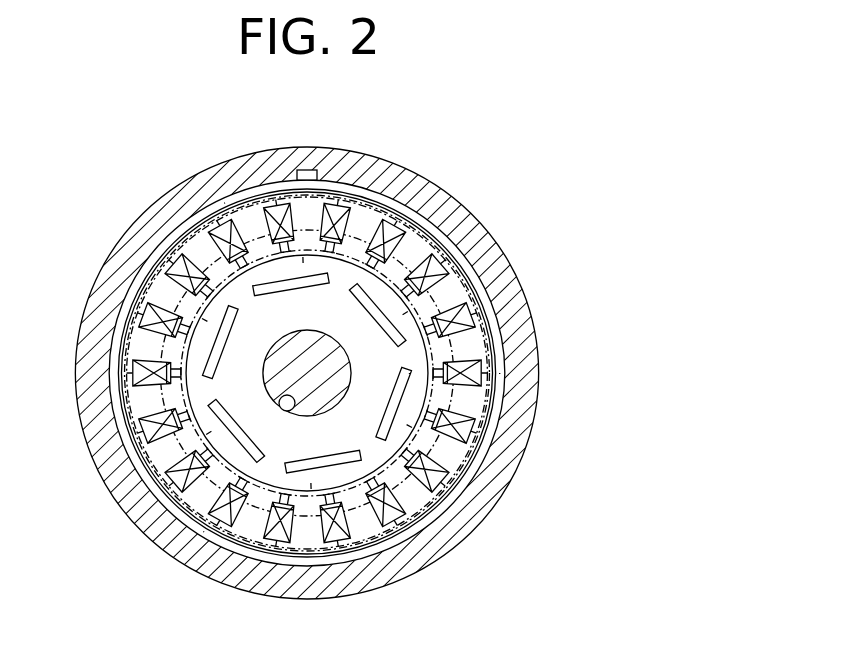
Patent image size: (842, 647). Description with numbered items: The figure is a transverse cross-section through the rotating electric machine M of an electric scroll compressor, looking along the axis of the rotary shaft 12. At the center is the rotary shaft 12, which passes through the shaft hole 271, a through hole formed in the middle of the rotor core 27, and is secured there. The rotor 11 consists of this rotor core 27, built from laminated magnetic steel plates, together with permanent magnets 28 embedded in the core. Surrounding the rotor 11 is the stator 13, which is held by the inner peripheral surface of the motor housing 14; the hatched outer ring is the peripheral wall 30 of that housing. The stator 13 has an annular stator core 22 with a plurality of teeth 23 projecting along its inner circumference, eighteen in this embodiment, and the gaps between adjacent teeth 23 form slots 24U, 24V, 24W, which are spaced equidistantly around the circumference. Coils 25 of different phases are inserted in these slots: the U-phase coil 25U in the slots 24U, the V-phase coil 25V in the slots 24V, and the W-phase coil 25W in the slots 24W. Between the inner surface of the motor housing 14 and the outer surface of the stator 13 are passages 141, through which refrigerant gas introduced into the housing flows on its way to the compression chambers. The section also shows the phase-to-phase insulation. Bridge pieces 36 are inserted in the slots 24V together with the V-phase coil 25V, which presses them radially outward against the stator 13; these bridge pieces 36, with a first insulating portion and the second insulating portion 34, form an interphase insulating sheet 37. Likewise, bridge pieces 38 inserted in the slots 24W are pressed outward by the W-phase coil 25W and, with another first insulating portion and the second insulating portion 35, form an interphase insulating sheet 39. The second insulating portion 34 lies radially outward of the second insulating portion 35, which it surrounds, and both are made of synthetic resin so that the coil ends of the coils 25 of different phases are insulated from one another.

The rotating electric machine M is at (462, 130).
The rotor 11 is at (393, 373).
The rotary shaft 12 is at (331, 351).
The stator 13 is at (316, 376).
The motor housing 14 is at (332, 323).
The stator core 22 is at (504, 282).
The teeth 23 is at (313, 262).
The slots 24U is at (263, 188).
The slots 24V is at (393, 192).
The slots 24W is at (130, 445).
The coils 25 is at (506, 266).
The U-phase coil 25U is at (470, 252).
The V-phase coil 25V is at (440, 216).
The W-phase coil 25W is at (362, 182).
The rotor core 27 is at (496, 405).
The permanent magnets 28 is at (470, 436).
The peripheral wall 30 is at (527, 338).
The second insulating portion 34 is at (269, 373).
The second insulating portion 35 is at (307, 373).
The bridge pieces 36 is at (426, 192).
The interphase insulating sheet 37 is at (128, 332).
The bridge pieces 38 is at (346, 168).
The interphase insulating sheet 39 is at (236, 300).
The passages 141 is at (286, 203).
The shaft hole 271 is at (296, 408).